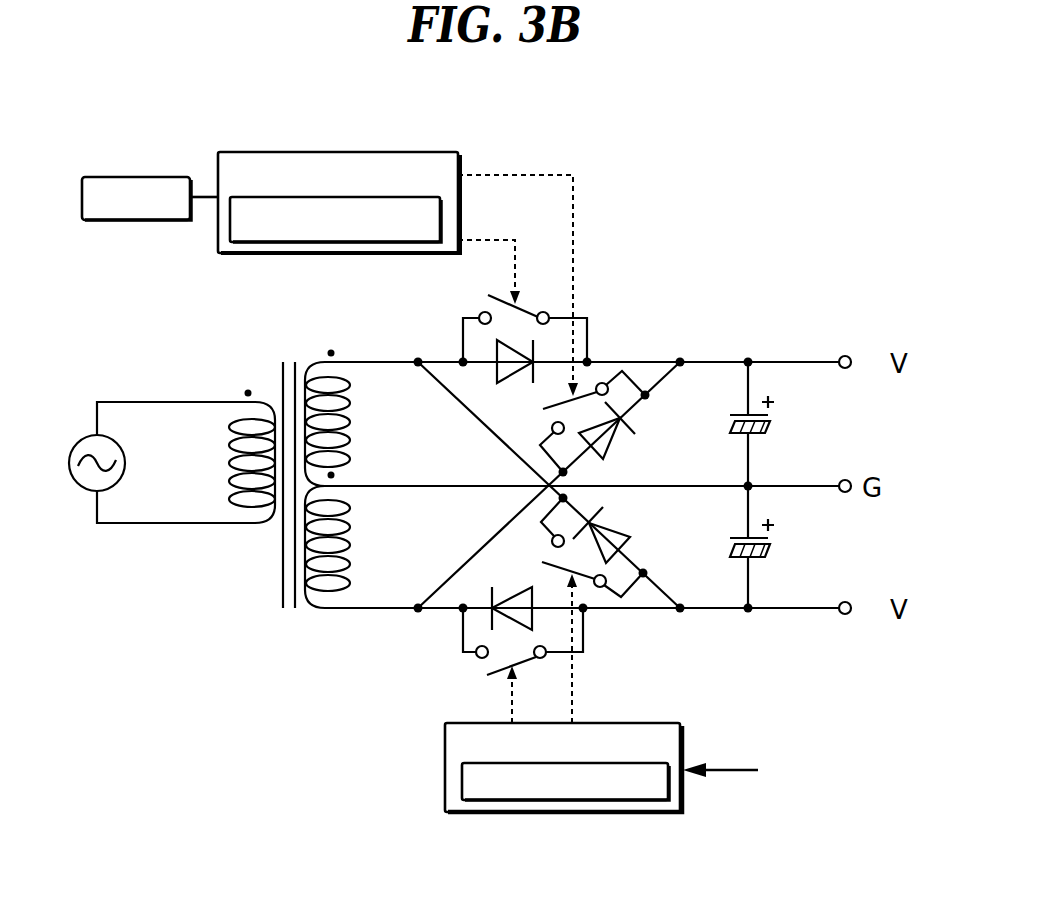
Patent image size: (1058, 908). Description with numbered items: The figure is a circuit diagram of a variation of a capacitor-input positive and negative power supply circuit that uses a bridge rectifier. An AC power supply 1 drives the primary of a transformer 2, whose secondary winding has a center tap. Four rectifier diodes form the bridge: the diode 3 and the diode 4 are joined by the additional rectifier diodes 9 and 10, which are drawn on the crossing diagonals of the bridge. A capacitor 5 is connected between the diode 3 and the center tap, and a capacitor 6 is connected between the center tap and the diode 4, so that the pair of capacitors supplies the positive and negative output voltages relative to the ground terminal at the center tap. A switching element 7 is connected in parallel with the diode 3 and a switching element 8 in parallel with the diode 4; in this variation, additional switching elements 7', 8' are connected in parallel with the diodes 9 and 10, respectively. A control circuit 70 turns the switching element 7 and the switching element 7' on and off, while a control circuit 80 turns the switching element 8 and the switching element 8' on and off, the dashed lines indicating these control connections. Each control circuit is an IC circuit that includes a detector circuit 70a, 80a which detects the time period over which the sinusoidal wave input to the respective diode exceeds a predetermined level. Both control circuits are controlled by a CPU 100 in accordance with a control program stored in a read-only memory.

The AC power supply 1 is at (80, 440).
The transformer 2 is at (281, 372).
The rectifier device (diode) 3 is at (511, 384).
The rectifier device (diode) 4 is at (520, 587).
The capacitor 5 is at (730, 415).
The capacitor 6 is at (730, 538).
The switching element 7 is at (525, 306).
The switching element 7' is at (592, 391).
The switching element 8 is at (520, 663).
The switching element 8' is at (559, 546).
The rectifier diode 9 is at (611, 446).
The rectifier diode 10 is at (609, 531).
The control circuit 70 is at (384, 243).
The detector circuit 70a is at (440, 211).
The control circuit 80 is at (527, 732).
The detector circuit 80a is at (618, 801).
The CPU 100 is at (128, 177).